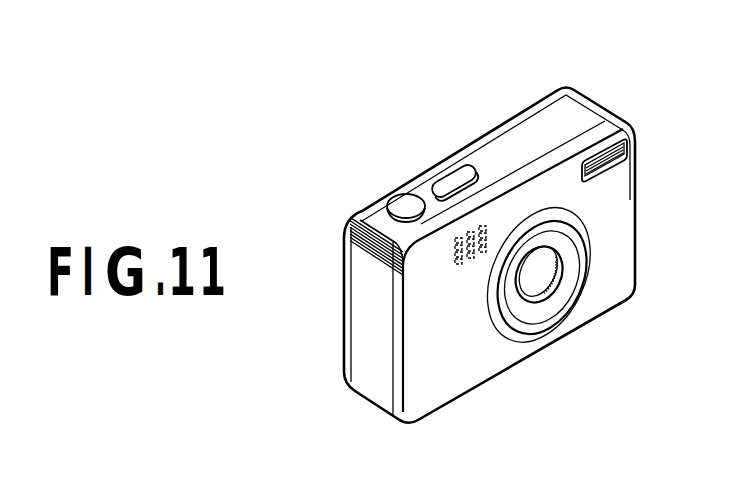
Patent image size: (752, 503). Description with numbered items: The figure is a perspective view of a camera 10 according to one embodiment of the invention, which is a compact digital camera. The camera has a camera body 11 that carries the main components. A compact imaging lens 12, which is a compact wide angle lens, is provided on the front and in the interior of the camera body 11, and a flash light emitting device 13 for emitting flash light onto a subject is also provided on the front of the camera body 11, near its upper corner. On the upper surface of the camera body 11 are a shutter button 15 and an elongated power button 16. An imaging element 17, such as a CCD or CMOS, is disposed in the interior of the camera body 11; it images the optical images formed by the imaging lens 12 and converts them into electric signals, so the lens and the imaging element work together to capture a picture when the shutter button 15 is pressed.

The camera 10 is at (440, 84).
The camera body 11 is at (554, 123).
The imaging lens 12 is at (543, 261).
The flash light emitting device 13 is at (626, 158).
The shutter button 15 is at (405, 205).
The power button 16 is at (457, 177).
The imaging element 17 is at (457, 262).